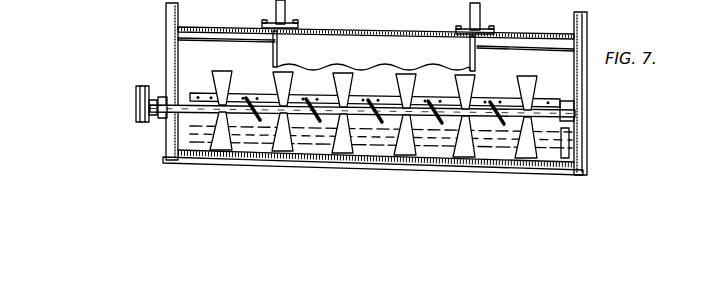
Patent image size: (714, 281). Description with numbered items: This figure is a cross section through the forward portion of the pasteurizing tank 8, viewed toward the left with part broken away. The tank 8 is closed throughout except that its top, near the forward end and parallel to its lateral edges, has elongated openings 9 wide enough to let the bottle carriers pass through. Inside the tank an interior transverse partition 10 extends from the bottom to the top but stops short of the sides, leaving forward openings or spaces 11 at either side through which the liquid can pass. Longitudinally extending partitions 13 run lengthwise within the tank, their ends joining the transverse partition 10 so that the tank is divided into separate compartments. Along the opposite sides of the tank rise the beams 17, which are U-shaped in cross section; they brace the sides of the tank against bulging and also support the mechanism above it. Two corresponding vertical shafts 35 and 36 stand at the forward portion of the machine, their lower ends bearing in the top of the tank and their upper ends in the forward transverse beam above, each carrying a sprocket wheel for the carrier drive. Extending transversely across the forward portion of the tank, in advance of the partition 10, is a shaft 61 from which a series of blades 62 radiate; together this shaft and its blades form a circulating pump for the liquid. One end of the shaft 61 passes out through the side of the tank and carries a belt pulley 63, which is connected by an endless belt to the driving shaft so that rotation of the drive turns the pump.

The pasteurizing tank 8 is at (577, 68).
The elongated openings 9 is at (228, 31).
The interior transverse partitions 10 is at (359, 30).
The forward openings or spaces 11 is at (375, 58).
The longitudinally extending partitions 13 is at (277, 56).
The beams 17 is at (166, 58).
The vertical shaft 35 is at (285, 14).
The vertical shaft 36 is at (481, 17).
The shaft 61 is at (205, 113).
The blades 62 is at (282, 83).
The belt pulley 63 is at (136, 110).